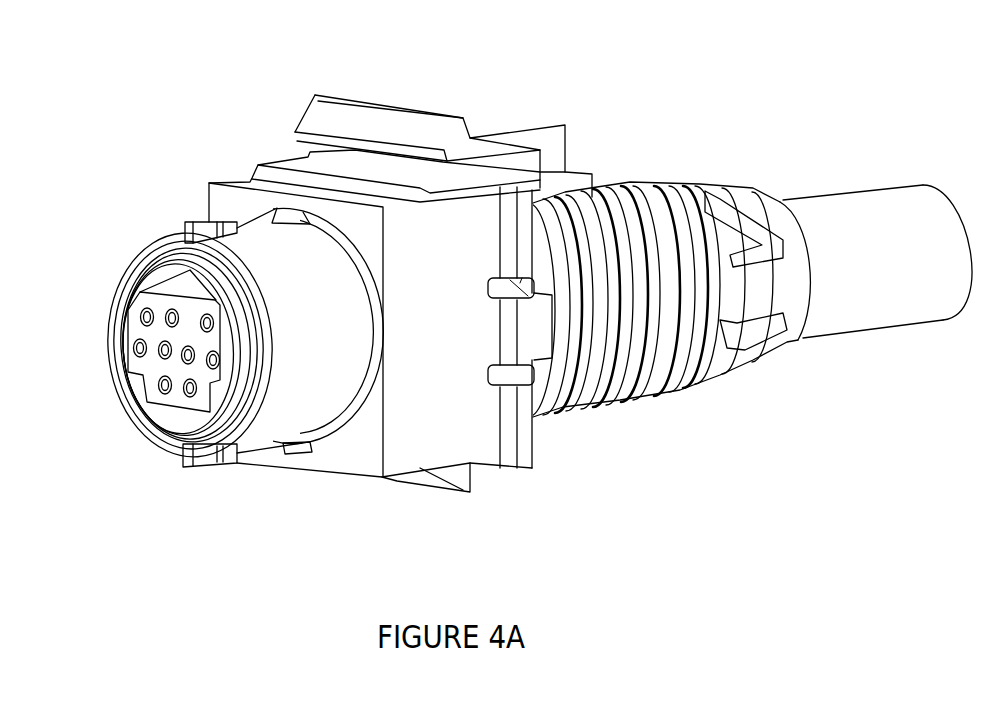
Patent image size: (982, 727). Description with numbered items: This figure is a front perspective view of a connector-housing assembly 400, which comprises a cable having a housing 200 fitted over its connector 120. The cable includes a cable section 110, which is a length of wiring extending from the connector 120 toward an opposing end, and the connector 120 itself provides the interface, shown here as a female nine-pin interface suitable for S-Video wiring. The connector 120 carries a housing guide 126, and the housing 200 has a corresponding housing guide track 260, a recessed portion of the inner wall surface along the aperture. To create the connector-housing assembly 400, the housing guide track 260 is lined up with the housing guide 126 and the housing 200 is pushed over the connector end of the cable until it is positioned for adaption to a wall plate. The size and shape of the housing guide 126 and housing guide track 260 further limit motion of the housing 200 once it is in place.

The connector-housing assembly 400 is at (898, 55).
The connector 120 is at (185, 193).
The housing 200 is at (473, 227).
The housing guide track 260 is at (312, 448).
The housing guide 126 is at (305, 445).
The cable section 110 is at (895, 297).